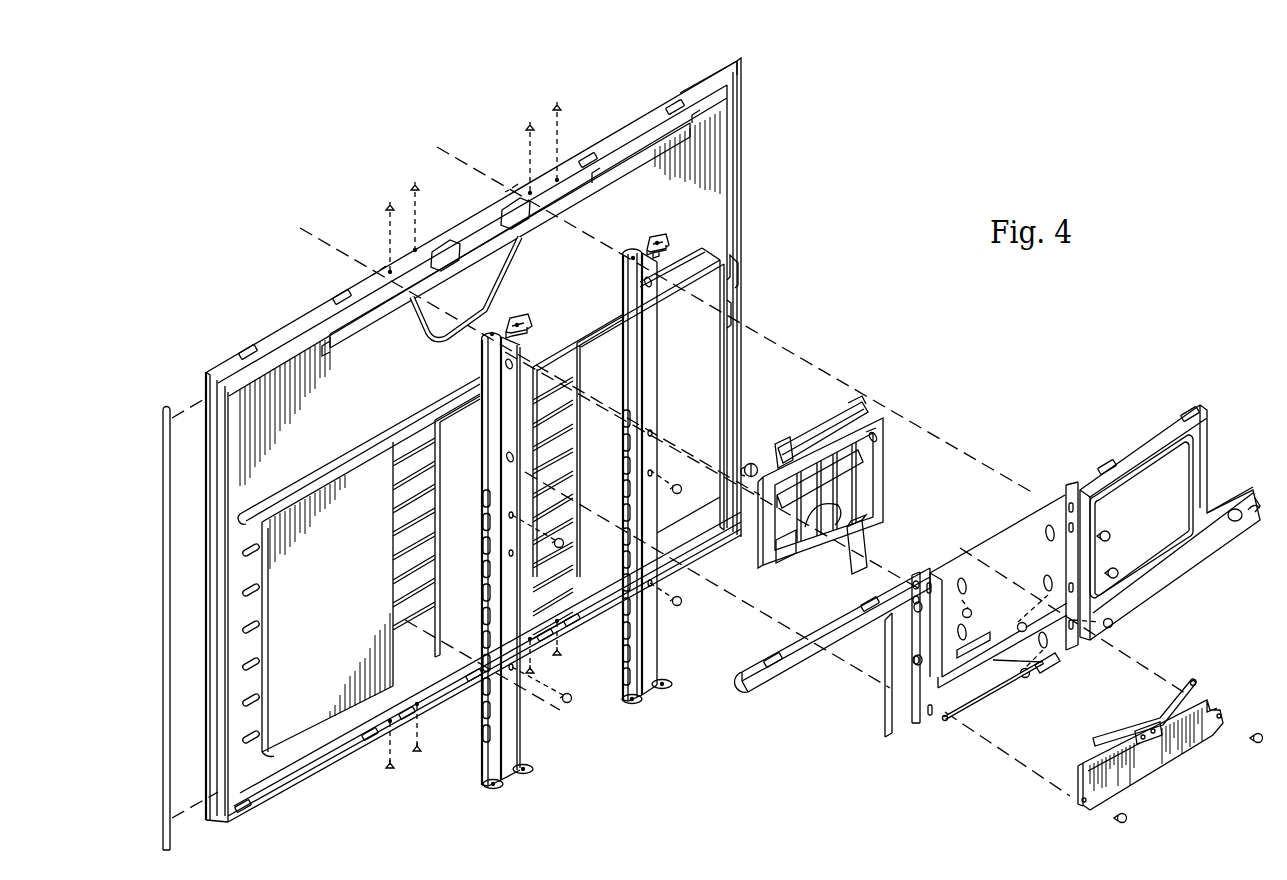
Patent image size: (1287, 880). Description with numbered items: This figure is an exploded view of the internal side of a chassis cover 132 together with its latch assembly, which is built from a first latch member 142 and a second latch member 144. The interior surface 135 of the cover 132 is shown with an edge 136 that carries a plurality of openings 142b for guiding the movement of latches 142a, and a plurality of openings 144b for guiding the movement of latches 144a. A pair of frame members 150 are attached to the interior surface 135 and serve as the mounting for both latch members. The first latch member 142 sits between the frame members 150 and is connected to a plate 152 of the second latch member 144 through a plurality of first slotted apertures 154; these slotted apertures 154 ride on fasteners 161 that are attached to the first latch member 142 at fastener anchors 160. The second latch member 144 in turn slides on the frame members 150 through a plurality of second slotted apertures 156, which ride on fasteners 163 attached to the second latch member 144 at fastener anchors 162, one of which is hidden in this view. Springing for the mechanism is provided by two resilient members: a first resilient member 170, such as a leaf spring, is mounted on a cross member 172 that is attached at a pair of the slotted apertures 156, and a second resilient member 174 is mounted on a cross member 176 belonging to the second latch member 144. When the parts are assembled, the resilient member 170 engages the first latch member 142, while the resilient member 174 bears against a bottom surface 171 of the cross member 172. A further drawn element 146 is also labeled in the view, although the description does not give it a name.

The cover 132 is at (745, 160).
The interior surface 135 is at (355, 412).
The edge 136 is at (697, 88).
The first latch member 142 is at (758, 530).
The latches 142a is at (845, 408).
The openings 142b is at (482, 192).
The second latch member 144 is at (1198, 423).
The latches 144a is at (770, 655).
The openings 144b is at (675, 105).
The latch member 146 is at (865, 460).
The frame members 150 is at (482, 356).
The plate 152 is at (1035, 598).
The first slotted apertures 154 is at (1030, 515).
The second slotted apertures 156 is at (917, 580).
The fastener anchors 160 is at (878, 437).
The fasteners 161 is at (1113, 568).
The fastener anchors 162 is at (665, 242).
The fasteners 163 is at (1100, 532).
The first resilient member 170 is at (1195, 682).
The bottom surface 171 is at (1137, 783).
The cross member 172 is at (1167, 757).
The second resilient member 174 is at (967, 697).
The cross member 176 is at (1048, 640).